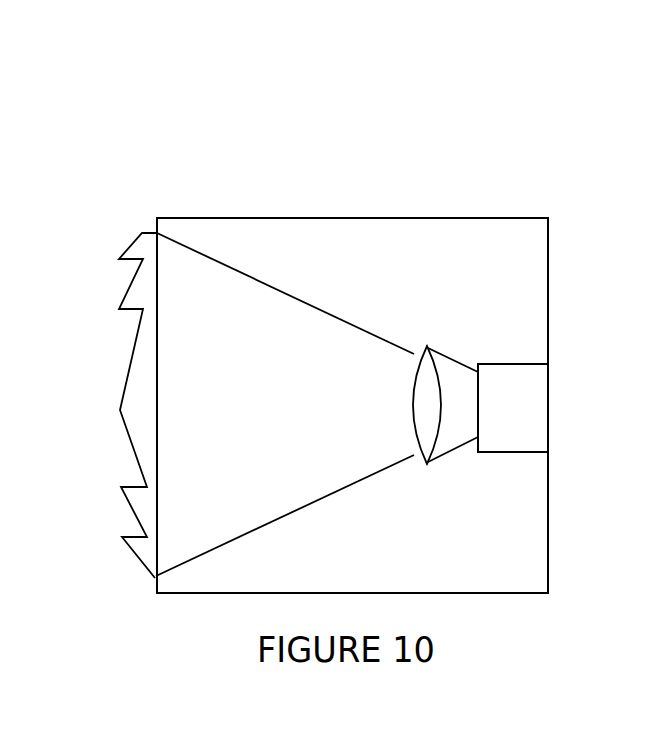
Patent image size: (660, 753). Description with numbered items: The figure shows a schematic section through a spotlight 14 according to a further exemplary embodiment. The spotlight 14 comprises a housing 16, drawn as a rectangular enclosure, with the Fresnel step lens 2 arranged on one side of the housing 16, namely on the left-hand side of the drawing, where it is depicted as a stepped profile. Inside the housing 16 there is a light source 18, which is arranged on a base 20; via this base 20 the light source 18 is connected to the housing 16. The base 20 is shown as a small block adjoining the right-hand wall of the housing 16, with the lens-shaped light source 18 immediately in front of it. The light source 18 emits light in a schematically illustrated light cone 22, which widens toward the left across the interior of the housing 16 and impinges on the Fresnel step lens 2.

The Fresnel step lens 2 is at (135, 388).
The spotlight 14 is at (402, 175).
The housing 16 is at (242, 218).
The light source 18 is at (457, 380).
The base 20 is at (527, 412).
The light cone 22 is at (286, 413).